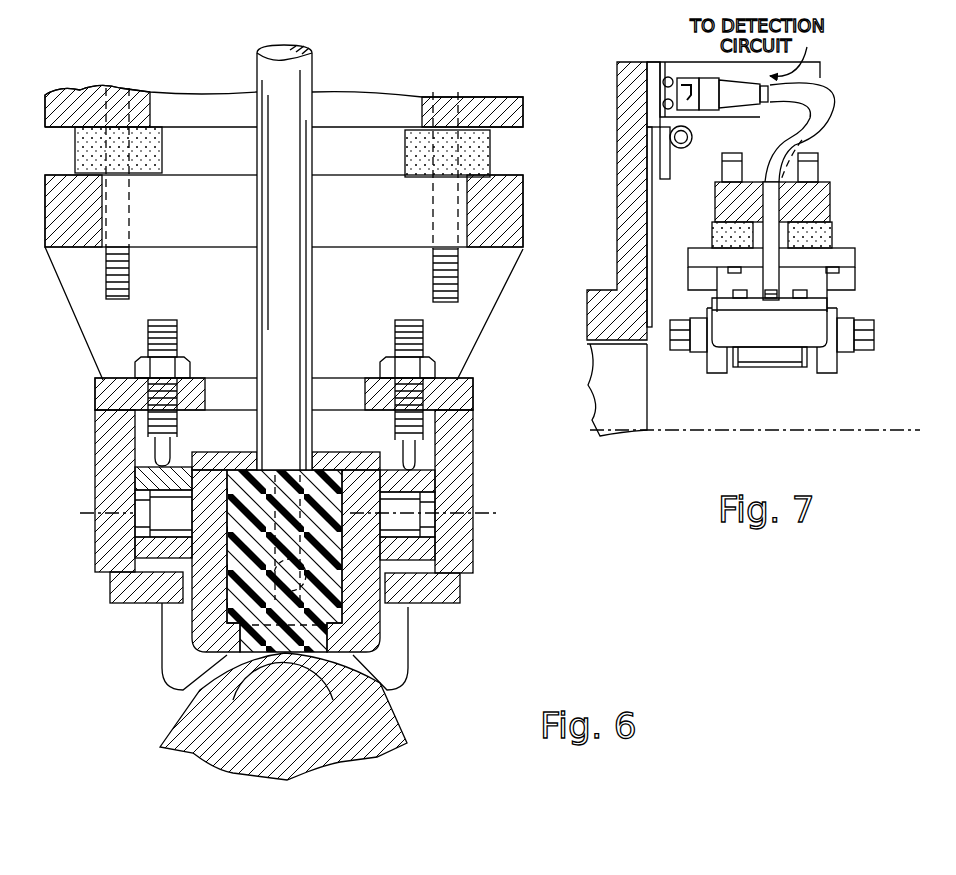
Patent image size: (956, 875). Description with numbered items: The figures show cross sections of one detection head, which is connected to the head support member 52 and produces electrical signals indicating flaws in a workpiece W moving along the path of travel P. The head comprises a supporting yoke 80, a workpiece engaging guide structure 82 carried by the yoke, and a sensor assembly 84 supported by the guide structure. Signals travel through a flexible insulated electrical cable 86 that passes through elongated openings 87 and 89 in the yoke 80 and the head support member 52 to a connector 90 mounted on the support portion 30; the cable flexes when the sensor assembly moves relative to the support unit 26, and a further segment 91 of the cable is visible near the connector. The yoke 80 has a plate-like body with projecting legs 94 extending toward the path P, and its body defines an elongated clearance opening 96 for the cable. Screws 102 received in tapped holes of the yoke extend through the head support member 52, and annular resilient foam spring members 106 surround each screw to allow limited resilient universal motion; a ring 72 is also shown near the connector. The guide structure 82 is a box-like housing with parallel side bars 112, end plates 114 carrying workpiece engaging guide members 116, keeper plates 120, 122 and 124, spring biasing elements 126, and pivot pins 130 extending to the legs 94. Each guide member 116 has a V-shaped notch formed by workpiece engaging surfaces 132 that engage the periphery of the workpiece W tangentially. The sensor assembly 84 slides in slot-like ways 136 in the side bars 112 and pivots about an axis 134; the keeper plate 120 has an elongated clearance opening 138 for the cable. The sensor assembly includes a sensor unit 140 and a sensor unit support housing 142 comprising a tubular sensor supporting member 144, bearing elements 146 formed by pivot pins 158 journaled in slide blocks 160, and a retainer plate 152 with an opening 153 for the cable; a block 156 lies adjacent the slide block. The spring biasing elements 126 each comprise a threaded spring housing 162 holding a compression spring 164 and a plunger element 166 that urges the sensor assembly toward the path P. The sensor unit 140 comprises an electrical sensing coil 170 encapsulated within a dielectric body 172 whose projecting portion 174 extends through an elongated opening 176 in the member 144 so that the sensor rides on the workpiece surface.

In FIG. 7, the support unit 26 is at (597, 332).
In FIG. 7, the support portion 30 is at (627, 110).
In FIG. 6, the head support member 52 is at (525, 120).
In FIG. 7, the head support member 52 is at (830, 204).
In FIG. 7, the ring 72 is at (690, 148).
In FIG. 6, the supporting yoke 80 is at (523, 207).
In FIG. 7, the supporting yoke 80 is at (855, 250).
In FIG. 6, the workpiece engaging guide structure 82 is at (412, 660).
In FIG. 7, the workpiece engaging guide structure 82 is at (828, 383).
In FIG. 6, the sensor assembly 84 is at (183, 680).
In FIG. 7, the sensor assembly 84 is at (774, 372).
In FIG. 6, the flexible insulated electrical cable 86 is at (314, 75).
In FIG. 7, the flexible insulated electrical cable 86 is at (828, 105).
In FIG. 6, the elongated opening 87 is at (180, 248).
In FIG. 6, the elongated opening 89 is at (420, 103).
In FIG. 7, the connector 90 is at (692, 78).
In FIG. 7, the cable segment 91 is at (804, 155).
In FIG. 6, the projecting legs 94 is at (488, 312).
In FIG. 7, the projecting legs 94 is at (855, 290).
In FIG. 6, the elongated clearance opening 96 is at (246, 295).
In FIG. 7, the elongated clearance opening 96 is at (733, 280).
In FIG. 6, the screws 102 is at (107, 273).
In FIG. 7, the screws 102 is at (735, 153).
In FIG. 6, the annular resilient spring member 106 is at (162, 150).
In FIG. 7, the annular resilient spring member 106 is at (712, 235).
In FIG. 6, the side bars 112 is at (97, 420).
In FIG. 7, the side bars 112 is at (727, 318).
In FIG. 7, the end plates 114 is at (823, 310).
In FIG. 6, the workpiece engaging guide members 116 is at (177, 690).
In FIG. 7, the workpiece engaging guide members 116 is at (709, 374).
In FIG. 6, the keeper plate 120 is at (475, 385).
In FIG. 7, the keeper plate 120 is at (786, 303).
In FIG. 6, the keeper plate 122 is at (112, 596).
In FIG. 7, the keeper plate 122 is at (757, 355).
In FIG. 6, the keeper plate 124 is at (462, 587).
In FIG. 6, the spring biasing elements 126 is at (137, 370).
In FIG. 7, the pivot pins 130 is at (676, 350).
In FIG. 6, the workpiece engaging surfaces 132 is at (235, 688).
In FIG. 6, the axis 134 is at (477, 515).
In FIG. 6, the slot-like ways 136 is at (137, 545).
In FIG. 6, the elongated clearance opening 138 is at (286, 454).
In FIG. 6, the sensor unit 140 is at (345, 550).
In FIG. 6, the sensor unit support housing 142 is at (298, 563).
In FIG. 6, the sensor supporting member 144 is at (405, 688).
In FIG. 6, the bearing elements 146 is at (115, 585).
In FIG. 6, the sensor unit retainer plate 152 is at (340, 456).
In FIG. 6, the opening 153 is at (250, 455).
In FIG. 6, the spacer block 156 is at (136, 478).
In FIG. 6, the pivot pins 158 is at (137, 520).
In FIG. 6, the slide blocks 160 is at (137, 497).
In FIG. 6, the spring housing 162 is at (452, 440).
In FIG. 6, the compression spring 164 is at (430, 392).
In FIG. 6, the plunger element 166 is at (168, 455).
In FIG. 6, the electrical sensing coil 170 is at (345, 585).
In FIG. 6, the body 172 is at (192, 618).
In FIG. 6, the projecting portion 174 is at (262, 675).
In FIG. 6, the elongated opening 176 is at (283, 681).
In FIG. 6, the workpiece W is at (407, 745).
In FIG. 6, the path of travel P is at (285, 783).
In FIG. 7, the path of travel P is at (843, 432).